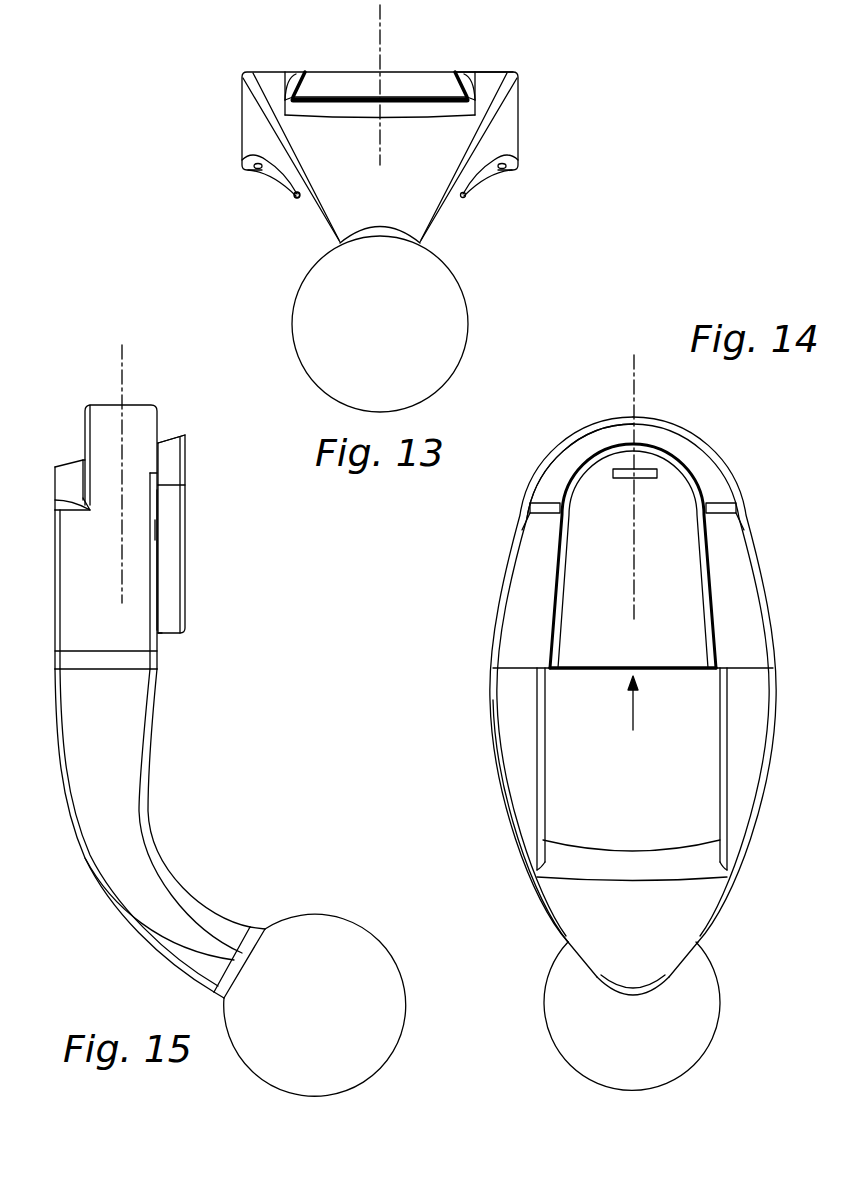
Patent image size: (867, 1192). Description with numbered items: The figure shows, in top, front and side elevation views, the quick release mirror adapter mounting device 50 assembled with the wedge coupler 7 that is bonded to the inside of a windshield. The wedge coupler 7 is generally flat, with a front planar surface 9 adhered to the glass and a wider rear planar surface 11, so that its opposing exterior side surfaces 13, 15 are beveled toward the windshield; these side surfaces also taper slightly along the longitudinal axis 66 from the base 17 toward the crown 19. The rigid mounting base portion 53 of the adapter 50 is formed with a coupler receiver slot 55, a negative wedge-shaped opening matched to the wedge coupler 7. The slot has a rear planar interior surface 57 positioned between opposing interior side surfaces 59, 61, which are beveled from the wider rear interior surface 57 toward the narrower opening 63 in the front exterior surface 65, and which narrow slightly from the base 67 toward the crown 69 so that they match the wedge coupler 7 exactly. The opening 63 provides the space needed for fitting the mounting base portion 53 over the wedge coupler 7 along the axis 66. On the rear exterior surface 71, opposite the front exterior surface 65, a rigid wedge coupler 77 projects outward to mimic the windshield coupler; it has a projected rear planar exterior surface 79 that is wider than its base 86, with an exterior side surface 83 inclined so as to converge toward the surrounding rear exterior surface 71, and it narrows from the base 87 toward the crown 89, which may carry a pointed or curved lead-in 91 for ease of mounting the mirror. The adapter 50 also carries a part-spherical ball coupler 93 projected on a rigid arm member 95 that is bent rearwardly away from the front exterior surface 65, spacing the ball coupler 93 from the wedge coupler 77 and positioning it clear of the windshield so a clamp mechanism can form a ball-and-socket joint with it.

In FIG. 13, the wedge coupler 7 is at (380, 65).
In FIG. 14, the wedge coupler 7 is at (582, 476).
In FIG. 15, the wedge coupler 7 is at (57, 482).
In FIG. 13, the front planar surface 9 is at (400, 72).
In FIG. 14, the front planar surface 9 is at (663, 551).
In FIG. 15, the front planar surface 9 is at (54, 493).
In FIG. 13, the rear planar surface 11 is at (445, 65).
In FIG. 13, the rear planar interior surface 57 is at (426, 97).
In FIG. 13, the exterior side surface 13 is at (239, 83).
In FIG. 14, the exterior side surface 13 is at (504, 519).
In FIG. 13, the interior side surface 59 is at (300, 90).
In FIG. 14, the interior side surface 59 is at (557, 535).
In FIG. 13, the exterior side surface 15 is at (526, 80).
In FIG. 14, the exterior side surface 15 is at (768, 529).
In FIG. 13, the interior side surface 61 is at (462, 86).
In FIG. 14, the interior side surface 61 is at (706, 546).
In FIG. 13, the base 17 is at (362, 85).
In FIG. 14, the base 17 is at (645, 672).
In FIG. 14, the crown 19 is at (626, 470).
In FIG. 15, the crown 19 is at (70, 460).
In FIG. 13, the quick release mirror adapter mounting device 50 is at (482, 178).
In FIG. 15, the quick release mirror adapter mounting device 50 is at (156, 696).
In FIG. 13, the mounting base portion 53 is at (252, 140).
In FIG. 14, the mounting base portion 53 is at (497, 755).
In FIG. 15, the mounting base portion 53 is at (104, 590).
In FIG. 13, the coupler receiver slot 55 is at (300, 82).
In FIG. 14, the coupler receiver slot 55 is at (712, 498).
In FIG. 15, the coupler receiver slot 55 is at (72, 500).
In FIG. 14, the opening 63 is at (623, 715).
In FIG. 13, the front exterior surface 65 is at (490, 71).
In FIG. 14, the front exterior surface 65 is at (730, 586).
In FIG. 15, the front exterior surface 65 is at (55, 551).
In FIG. 13, the longitudinal axis 66 is at (384, 30).
In FIG. 14, the longitudinal axis 66 is at (636, 378).
In FIG. 15, the longitudinal axis 66 is at (124, 364).
In FIG. 13, the base 67 is at (388, 108).
In FIG. 14, the base 67 is at (576, 677).
In FIG. 14, the crown 69 is at (686, 466).
In FIG. 15, the rear exterior surface 71 is at (159, 510).
In FIG. 13, the wedge coupler 77 is at (292, 196).
In FIG. 15, the wedge coupler 77 is at (202, 532).
In FIG. 15, the rear planar exterior surface 79 is at (186, 518).
In FIG. 15, the exterior side surface 83 is at (170, 566).
In FIG. 15, the base 86 is at (159, 530).
In FIG. 15, the base 87 is at (166, 636).
In FIG. 15, the crown 89 is at (173, 437).
In FIG. 15, the lead-in 91 is at (172, 456).
In FIG. 13, the ball coupler 93 is at (391, 345).
In FIG. 14, the ball coupler 93 is at (649, 1048).
In FIG. 15, the ball coupler 93 is at (319, 1007).
In FIG. 13, the arm member 95 is at (432, 228).
In FIG. 14, the arm member 95 is at (716, 915).
In FIG. 15, the arm member 95 is at (126, 927).